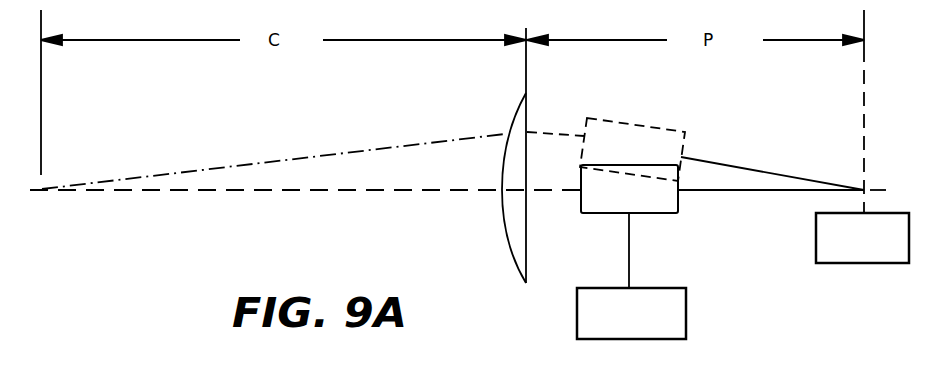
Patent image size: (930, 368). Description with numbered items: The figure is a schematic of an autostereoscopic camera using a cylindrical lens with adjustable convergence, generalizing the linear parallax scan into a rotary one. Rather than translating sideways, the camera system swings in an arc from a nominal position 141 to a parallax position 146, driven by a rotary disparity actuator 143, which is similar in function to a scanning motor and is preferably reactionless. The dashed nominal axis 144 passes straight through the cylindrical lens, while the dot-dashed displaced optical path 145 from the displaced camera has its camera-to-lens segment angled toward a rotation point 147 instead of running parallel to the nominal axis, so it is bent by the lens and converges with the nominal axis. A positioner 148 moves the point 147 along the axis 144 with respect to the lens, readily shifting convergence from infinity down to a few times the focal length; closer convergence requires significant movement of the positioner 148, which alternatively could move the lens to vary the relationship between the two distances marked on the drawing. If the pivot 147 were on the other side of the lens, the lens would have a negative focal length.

The nominal position 141 is at (667, 214).
The rotary disparity actuator 143 is at (609, 324).
The axis 144 is at (385, 192).
The displaced optical path 145 is at (299, 160).
The parallax position 146 is at (648, 124).
The rotation point 147 is at (862, 187).
The positioner 148 is at (840, 250).